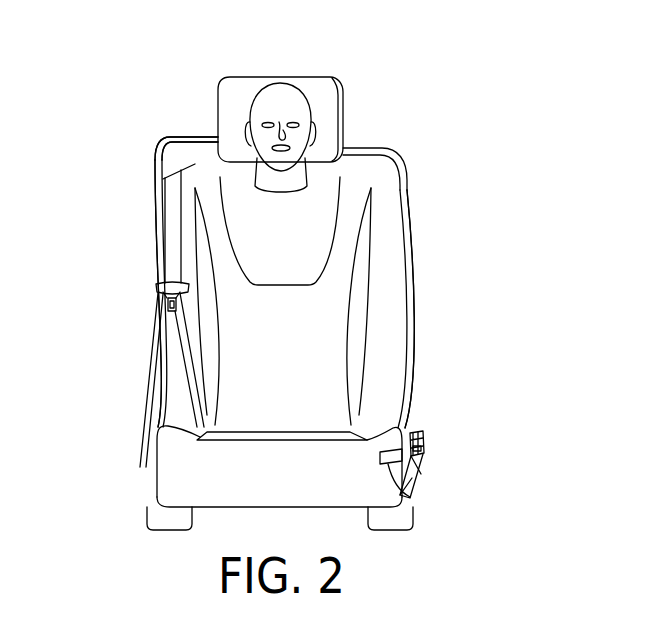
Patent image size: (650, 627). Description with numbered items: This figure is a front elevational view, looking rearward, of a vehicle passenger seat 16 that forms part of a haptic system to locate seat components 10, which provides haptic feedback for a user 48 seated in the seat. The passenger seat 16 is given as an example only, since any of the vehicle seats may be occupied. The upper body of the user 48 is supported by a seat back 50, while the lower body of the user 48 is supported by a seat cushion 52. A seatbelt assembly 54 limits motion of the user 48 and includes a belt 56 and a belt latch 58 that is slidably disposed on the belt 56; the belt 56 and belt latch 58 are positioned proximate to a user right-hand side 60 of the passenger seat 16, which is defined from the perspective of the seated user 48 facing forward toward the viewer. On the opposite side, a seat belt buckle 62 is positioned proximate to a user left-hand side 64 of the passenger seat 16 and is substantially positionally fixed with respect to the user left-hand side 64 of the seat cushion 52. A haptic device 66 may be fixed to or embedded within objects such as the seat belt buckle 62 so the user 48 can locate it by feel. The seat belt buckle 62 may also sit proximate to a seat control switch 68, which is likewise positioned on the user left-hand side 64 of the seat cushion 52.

The haptic system to locate seat components 10 is at (369, 70).
The passenger seat 16 is at (425, 178).
The user 48 is at (278, 93).
The seat back 50 is at (170, 141).
The seat cushion 52 is at (387, 498).
The seatbelt assembly 54 is at (97, 178).
The belt 56 is at (172, 248).
The belt latch 58 is at (167, 303).
The user right-hand side 60 is at (145, 188).
The seat belt buckle 62 is at (423, 432).
The user left-hand side 64 is at (429, 502).
The haptic device 66 is at (423, 449).
The seat control switch 68 is at (388, 463).